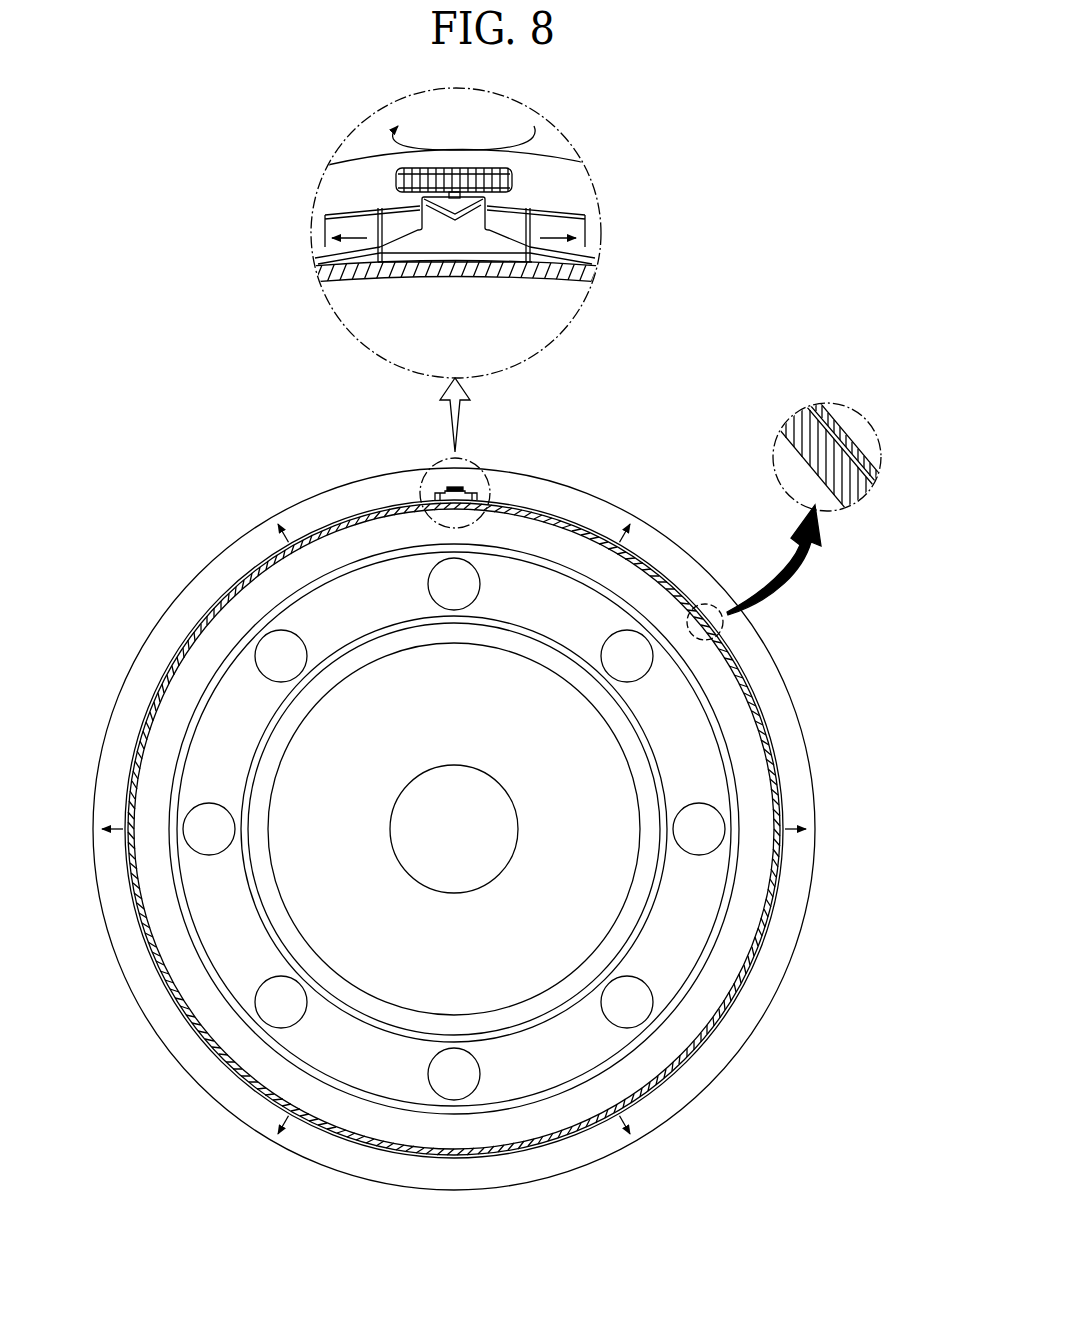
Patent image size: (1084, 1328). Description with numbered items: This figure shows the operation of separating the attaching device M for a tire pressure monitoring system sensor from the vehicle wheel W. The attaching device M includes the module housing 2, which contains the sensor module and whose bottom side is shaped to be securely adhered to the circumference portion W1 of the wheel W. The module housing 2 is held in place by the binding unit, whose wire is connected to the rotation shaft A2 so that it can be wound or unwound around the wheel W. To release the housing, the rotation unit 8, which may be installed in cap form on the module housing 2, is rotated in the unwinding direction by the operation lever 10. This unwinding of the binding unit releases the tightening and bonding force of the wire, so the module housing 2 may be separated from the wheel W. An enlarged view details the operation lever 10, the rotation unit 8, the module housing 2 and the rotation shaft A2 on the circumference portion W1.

The operation lever 10 is at (400, 180).
The rotation unit 8 is at (413, 203).
The attaching device M is at (470, 476).
The module housing 2 is at (560, 226).
The rotation shaft A2 is at (567, 520).
The vehicle wheel W is at (687, 553).
The circumference portion W1 is at (760, 690).